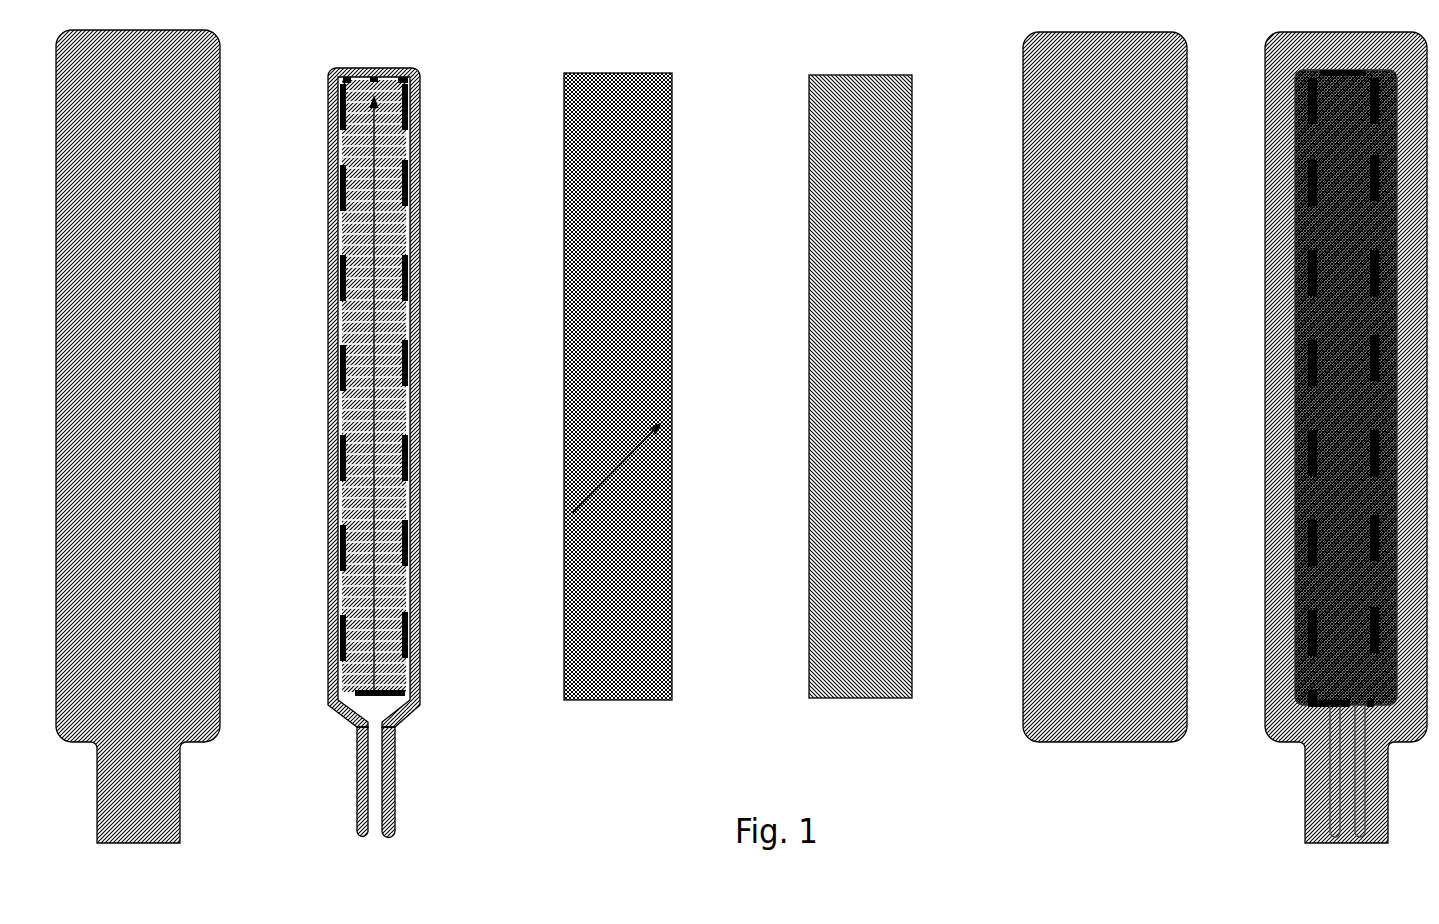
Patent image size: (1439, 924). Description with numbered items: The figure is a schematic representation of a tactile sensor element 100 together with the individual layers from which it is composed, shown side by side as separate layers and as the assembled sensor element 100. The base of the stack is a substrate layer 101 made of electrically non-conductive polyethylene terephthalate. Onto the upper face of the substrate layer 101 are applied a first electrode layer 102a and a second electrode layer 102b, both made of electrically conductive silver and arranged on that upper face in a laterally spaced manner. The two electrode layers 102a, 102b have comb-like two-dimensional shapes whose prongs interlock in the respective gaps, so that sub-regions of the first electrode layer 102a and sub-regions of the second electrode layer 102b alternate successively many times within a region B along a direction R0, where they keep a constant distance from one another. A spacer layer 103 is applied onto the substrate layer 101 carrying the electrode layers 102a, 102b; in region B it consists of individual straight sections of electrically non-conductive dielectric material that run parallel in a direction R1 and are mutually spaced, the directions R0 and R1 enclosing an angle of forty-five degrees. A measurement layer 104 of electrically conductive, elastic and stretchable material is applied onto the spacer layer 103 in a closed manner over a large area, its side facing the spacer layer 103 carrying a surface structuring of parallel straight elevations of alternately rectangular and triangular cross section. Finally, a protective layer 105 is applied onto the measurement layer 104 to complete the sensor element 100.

The tactile sensor element 100 is at (1346, 455).
The substrate layer 101 is at (138, 459).
The first electrode layer 102a is at (356, 797).
The second electrode layer 102b is at (415, 797).
The spacer layer 103 is at (618, 405).
The measurement layer 104 is at (860, 406).
The protective layer 105 is at (1105, 405).
The region B is at (421, 322).
The direction R0 is at (390, 448).
The direction R1 is at (653, 450).